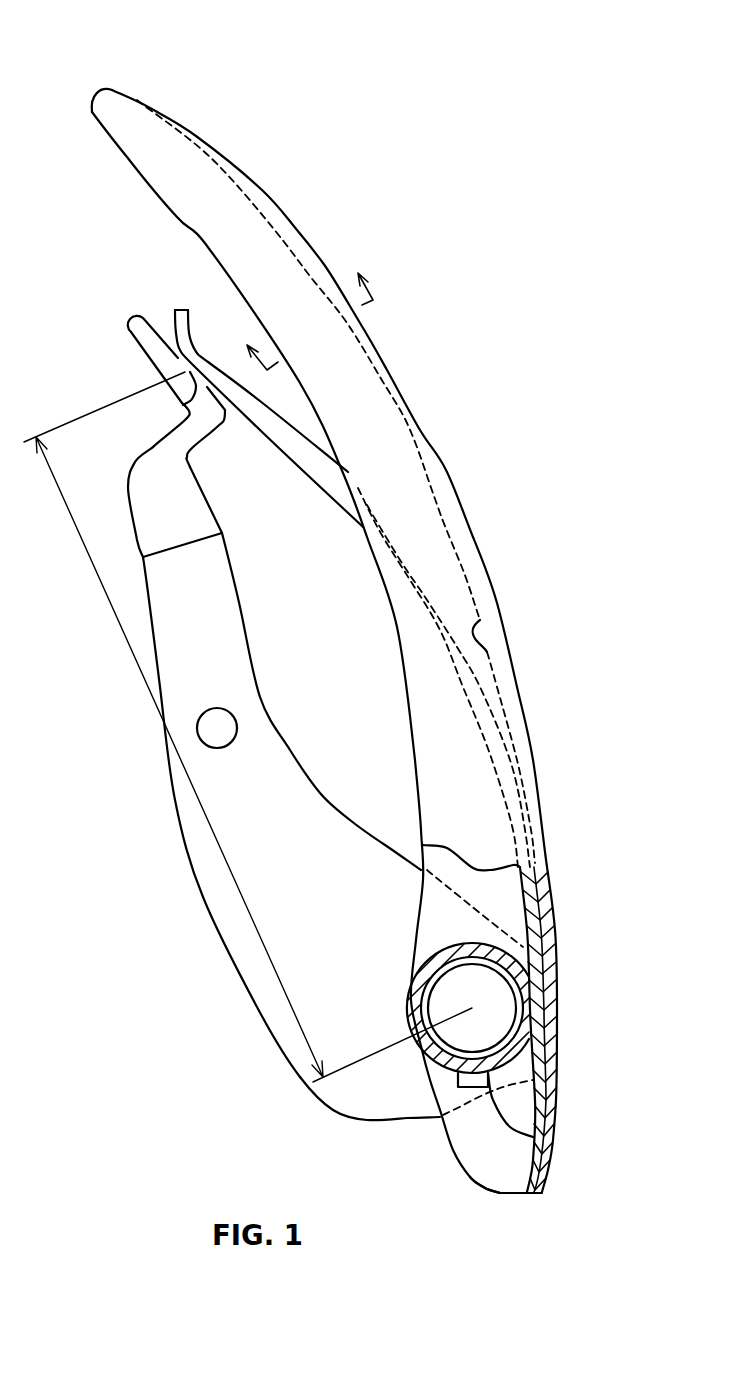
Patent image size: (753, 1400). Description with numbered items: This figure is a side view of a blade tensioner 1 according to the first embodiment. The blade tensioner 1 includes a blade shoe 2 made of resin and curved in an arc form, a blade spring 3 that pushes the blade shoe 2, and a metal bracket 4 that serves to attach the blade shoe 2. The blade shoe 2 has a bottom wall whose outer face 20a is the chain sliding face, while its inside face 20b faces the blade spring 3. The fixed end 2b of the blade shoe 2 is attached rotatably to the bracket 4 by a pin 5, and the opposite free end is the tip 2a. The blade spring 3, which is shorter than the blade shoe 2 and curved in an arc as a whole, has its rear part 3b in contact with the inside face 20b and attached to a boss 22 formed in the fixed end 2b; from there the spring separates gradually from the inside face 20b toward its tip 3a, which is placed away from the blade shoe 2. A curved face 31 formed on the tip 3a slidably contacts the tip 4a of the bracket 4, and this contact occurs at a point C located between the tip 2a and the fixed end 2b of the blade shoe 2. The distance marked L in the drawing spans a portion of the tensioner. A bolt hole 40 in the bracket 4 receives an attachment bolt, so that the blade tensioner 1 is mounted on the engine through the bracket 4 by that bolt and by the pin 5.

The blade tensioner 1 is at (517, 360).
The blade shoe 2 is at (455, 483).
The tip of blade shoe 2a is at (110, 97).
The fixed end of blade shoe 2b is at (503, 1183).
The outer face of bottom wall 20a is at (488, 580).
The inside face of bottom wall 20b is at (493, 660).
The boss 22 is at (458, 1075).
The blade spring 3 is at (310, 470).
The tip of blade spring 3a is at (182, 307).
The rear part of blade spring 3b is at (533, 1137).
The curved face 31 is at (173, 328).
The bracket 4 is at (203, 897).
The tip of bracket 4a is at (143, 355).
The bolt hole 40 is at (214, 706).
The pin 5 is at (490, 1008).
The contact point C is at (182, 402).
The length dimension L is at (248, 727).